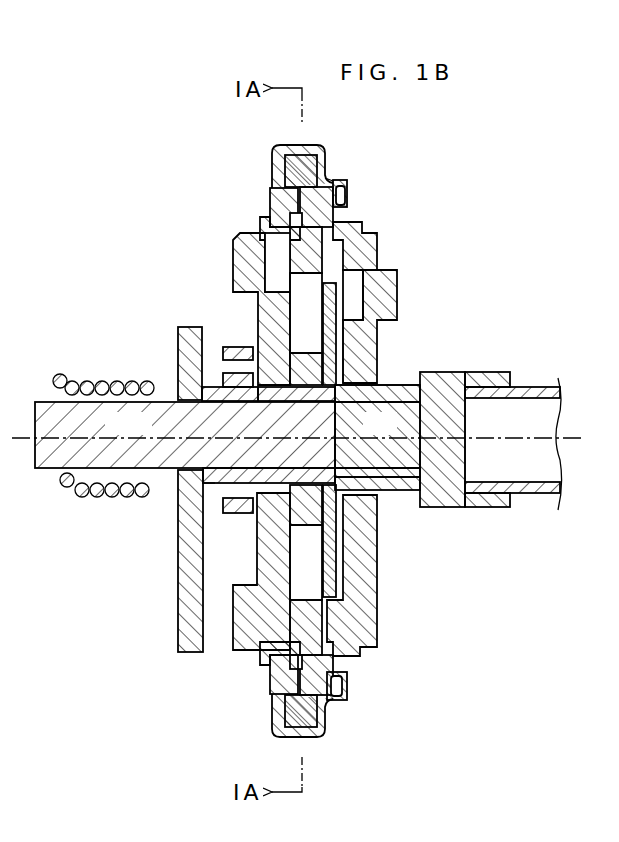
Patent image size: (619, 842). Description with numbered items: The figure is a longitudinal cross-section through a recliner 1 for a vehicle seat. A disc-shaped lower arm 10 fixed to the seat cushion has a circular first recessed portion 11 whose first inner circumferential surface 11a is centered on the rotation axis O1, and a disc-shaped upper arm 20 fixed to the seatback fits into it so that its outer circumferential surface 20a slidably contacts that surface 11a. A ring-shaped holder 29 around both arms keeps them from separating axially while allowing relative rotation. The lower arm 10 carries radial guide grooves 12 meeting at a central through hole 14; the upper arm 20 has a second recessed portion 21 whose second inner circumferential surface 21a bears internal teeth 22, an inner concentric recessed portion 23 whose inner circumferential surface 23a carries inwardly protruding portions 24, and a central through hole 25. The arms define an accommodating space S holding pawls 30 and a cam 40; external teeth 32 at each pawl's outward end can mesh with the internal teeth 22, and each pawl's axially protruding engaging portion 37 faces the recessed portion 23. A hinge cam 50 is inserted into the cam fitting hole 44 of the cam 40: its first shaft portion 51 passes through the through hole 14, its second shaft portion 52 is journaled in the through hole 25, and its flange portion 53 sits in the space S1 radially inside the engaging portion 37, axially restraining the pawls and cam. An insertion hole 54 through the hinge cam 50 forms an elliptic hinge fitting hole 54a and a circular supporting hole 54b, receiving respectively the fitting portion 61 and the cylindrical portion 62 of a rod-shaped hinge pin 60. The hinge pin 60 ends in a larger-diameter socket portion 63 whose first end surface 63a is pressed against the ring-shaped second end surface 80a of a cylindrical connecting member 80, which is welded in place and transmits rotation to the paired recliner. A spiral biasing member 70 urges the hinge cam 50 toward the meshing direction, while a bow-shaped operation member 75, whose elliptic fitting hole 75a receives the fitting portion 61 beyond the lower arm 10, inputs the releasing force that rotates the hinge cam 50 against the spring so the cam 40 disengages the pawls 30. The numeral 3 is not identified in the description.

The recliner 1 is at (500, 233).
The holder 29 is at (300, 141).
The outer circumferential surface 20a is at (337, 181).
The first inner circumferential surface 11a is at (277, 192).
The first recessed portion 11 is at (341, 185).
The second recessed portion 21 is at (265, 216).
The external teeth 32 is at (318, 217).
The lower arm 10 is at (238, 256).
The pawl 30 is at (288, 267).
The guide groove 12 is at (291, 318).
The engaging portion 37 is at (366, 242).
The upper arm 20 is at (398, 291).
The cam 40 is at (371, 344).
The cylindrical portion 62 is at (408, 408).
The socket portion 63 is at (496, 370).
The second end surface 80a is at (458, 387).
The connecting member 80 is at (538, 387).
The first end surface 63a is at (468, 417).
The rotation axis O1 is at (543, 442).
The supporting hole 54b is at (444, 507).
The second shaft portion 52 is at (407, 471).
The flange portion 53 is at (331, 508).
The internal teeth 22 is at (322, 615).
The second inner circumferential surface 21a is at (346, 630).
The inner circumferential surface 23a is at (343, 642).
The recessed portion 23 is at (295, 548).
The accommodating space S is at (258, 630).
The space S1 is at (280, 648).
The hinge fitting hole 54a is at (177, 468).
The first shaft portion 51 is at (230, 514).
The biasing member 70 is at (210, 488).
The operation member 75 is at (183, 601).
The fitting hole 75a is at (185, 403).
The insertion hole 54 is at (253, 404).
The through hole 14 is at (295, 402).
The cam fitting hole 44 is at (335, 403).
The through hole 25 is at (377, 431).
The protruding portion 24 is at (40, 412).
The hinge pin 60 is at (33, 385).
The fitting portion 61 is at (90, 500).
The body 3 is at (6, 513).
The hinge cam 50 is at (222, 360).